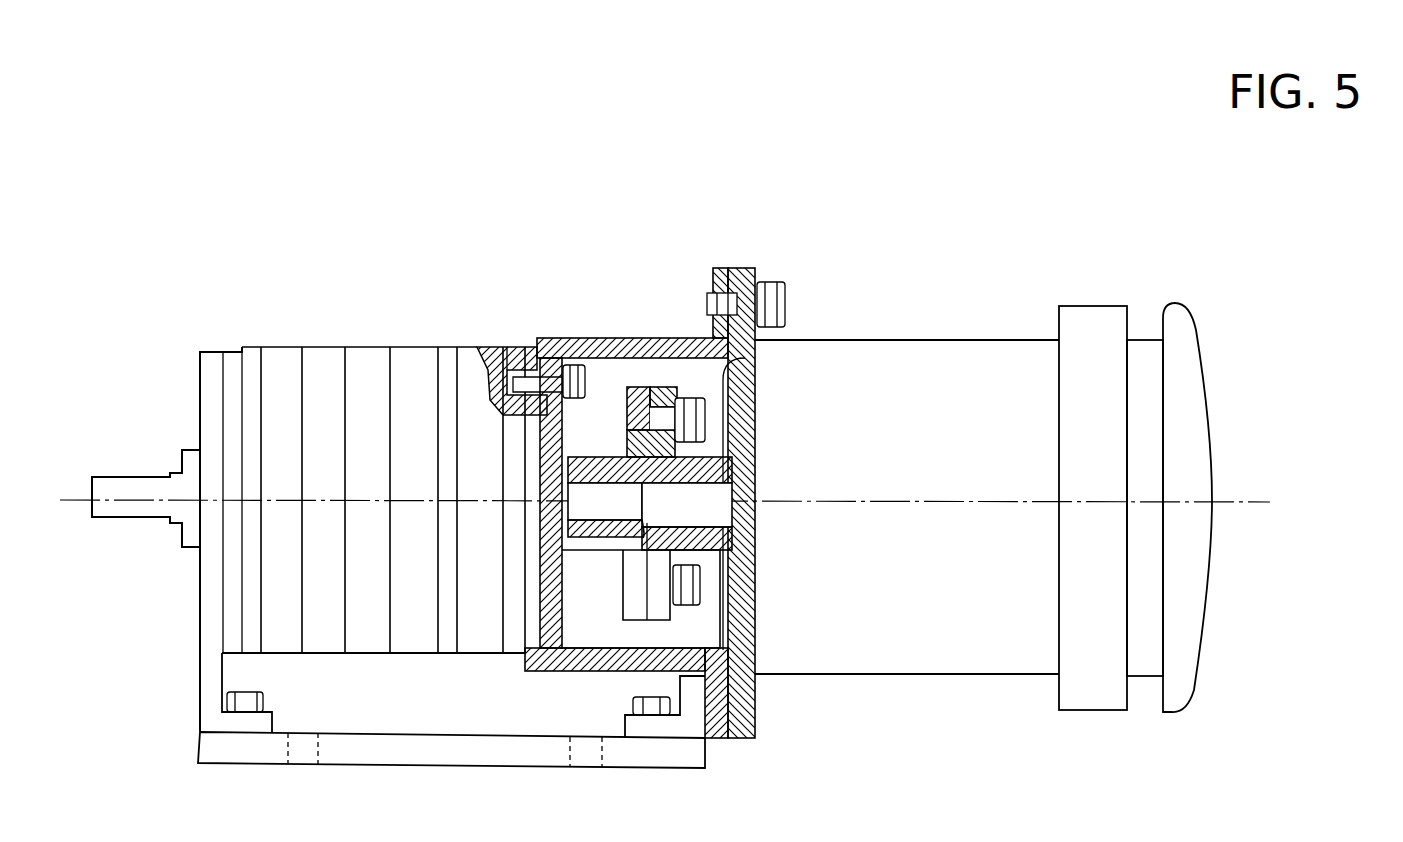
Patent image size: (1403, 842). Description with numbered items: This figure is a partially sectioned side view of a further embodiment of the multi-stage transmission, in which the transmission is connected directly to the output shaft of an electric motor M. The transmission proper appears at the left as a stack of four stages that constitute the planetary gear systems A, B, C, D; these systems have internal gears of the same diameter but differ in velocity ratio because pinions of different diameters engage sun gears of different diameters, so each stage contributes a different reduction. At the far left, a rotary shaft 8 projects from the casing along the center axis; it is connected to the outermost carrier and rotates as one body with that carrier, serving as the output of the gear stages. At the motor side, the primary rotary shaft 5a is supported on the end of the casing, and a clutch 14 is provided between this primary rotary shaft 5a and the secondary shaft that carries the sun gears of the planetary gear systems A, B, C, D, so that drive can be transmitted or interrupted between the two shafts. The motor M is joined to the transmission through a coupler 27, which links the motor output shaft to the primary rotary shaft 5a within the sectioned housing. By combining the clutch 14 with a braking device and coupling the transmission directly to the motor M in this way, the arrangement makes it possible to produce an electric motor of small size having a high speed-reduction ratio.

The rotary shaft 8 is at (128, 477).
The clutch 14 is at (500, 318).
The primary rotary shaft 5a is at (600, 487).
The coupler 27 is at (625, 592).
The motor M is at (908, 343).
The planetary gear system A is at (425, 312).
The planetary gear system B is at (378, 312).
The planetary gear system C is at (336, 312).
The planetary gear system D is at (292, 312).